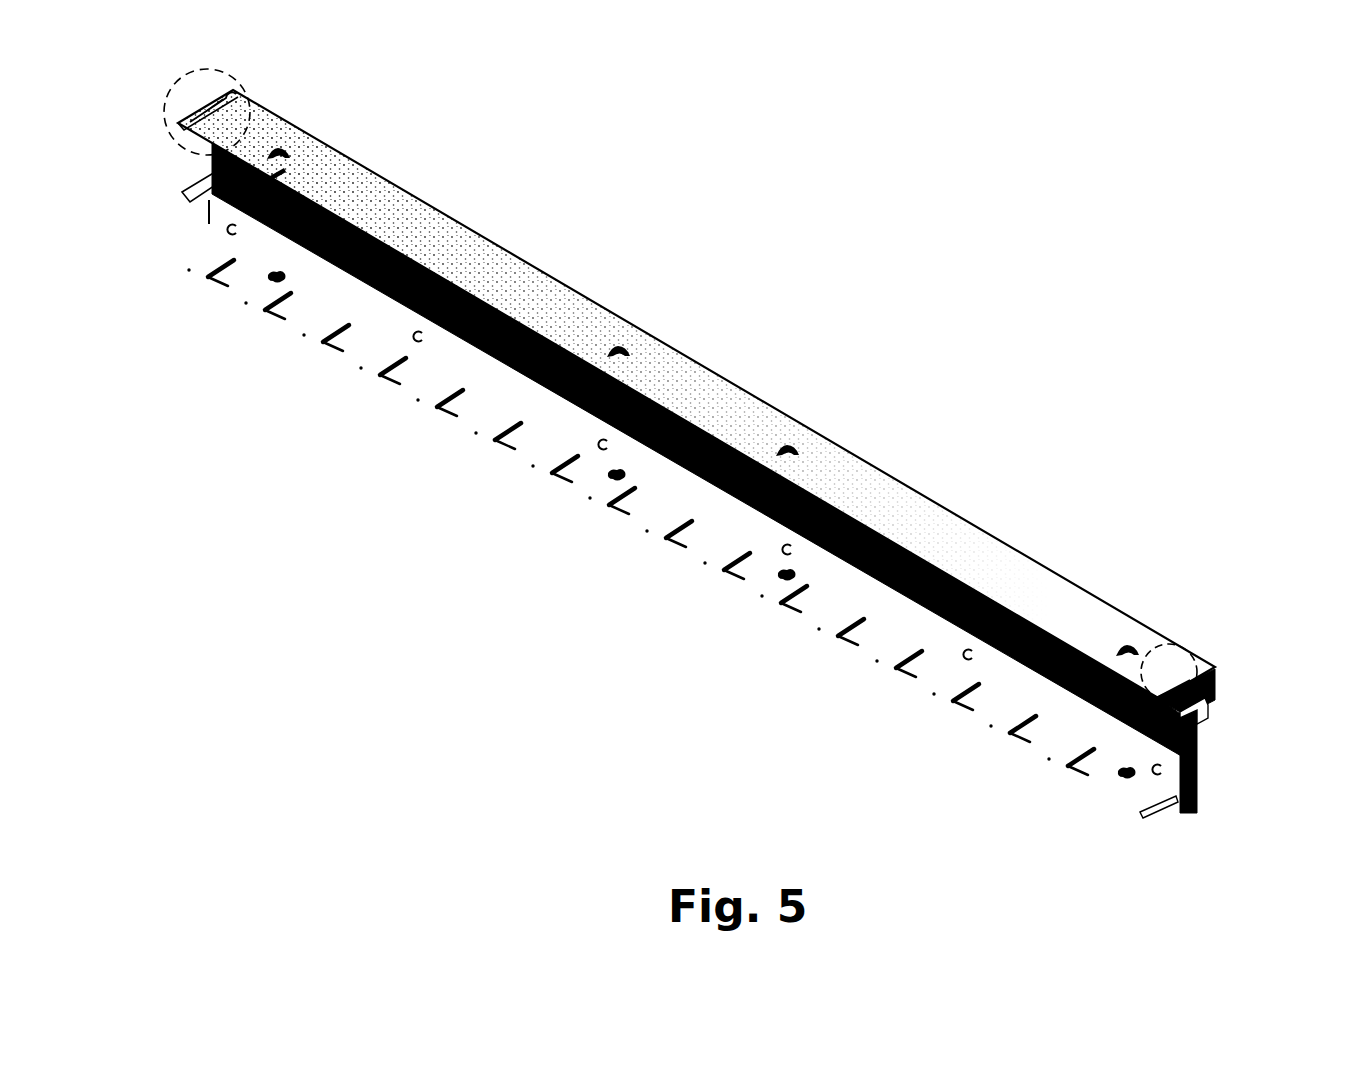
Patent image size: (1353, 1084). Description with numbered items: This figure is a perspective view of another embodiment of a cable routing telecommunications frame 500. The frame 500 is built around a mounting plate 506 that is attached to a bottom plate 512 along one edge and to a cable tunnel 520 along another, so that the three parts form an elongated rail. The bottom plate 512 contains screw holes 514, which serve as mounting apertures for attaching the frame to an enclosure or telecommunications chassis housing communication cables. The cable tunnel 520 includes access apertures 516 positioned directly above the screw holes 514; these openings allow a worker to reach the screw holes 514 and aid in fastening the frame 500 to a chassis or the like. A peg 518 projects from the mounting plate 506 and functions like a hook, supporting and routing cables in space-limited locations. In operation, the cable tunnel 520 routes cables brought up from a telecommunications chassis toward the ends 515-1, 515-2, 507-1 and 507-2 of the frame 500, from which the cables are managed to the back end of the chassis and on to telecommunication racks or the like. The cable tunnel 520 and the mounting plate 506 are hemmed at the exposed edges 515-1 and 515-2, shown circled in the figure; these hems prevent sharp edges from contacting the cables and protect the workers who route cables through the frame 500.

The cable routing telecommunications frame 500 is at (974, 505).
The mounting plate 506 is at (455, 340).
The end of cable routing frame 507-1 is at (277, 180).
The end of cable routing frame 507-2 is at (1180, 767).
The bottom plate 512 is at (645, 517).
The screw holes 514 is at (778, 572).
The exposed edge 515-1 is at (218, 92).
The exposed edge 515-2 is at (1173, 673).
The access apertures 516 is at (622, 356).
The peg 518 is at (190, 197).
The cable tunnel 520 is at (1205, 702).